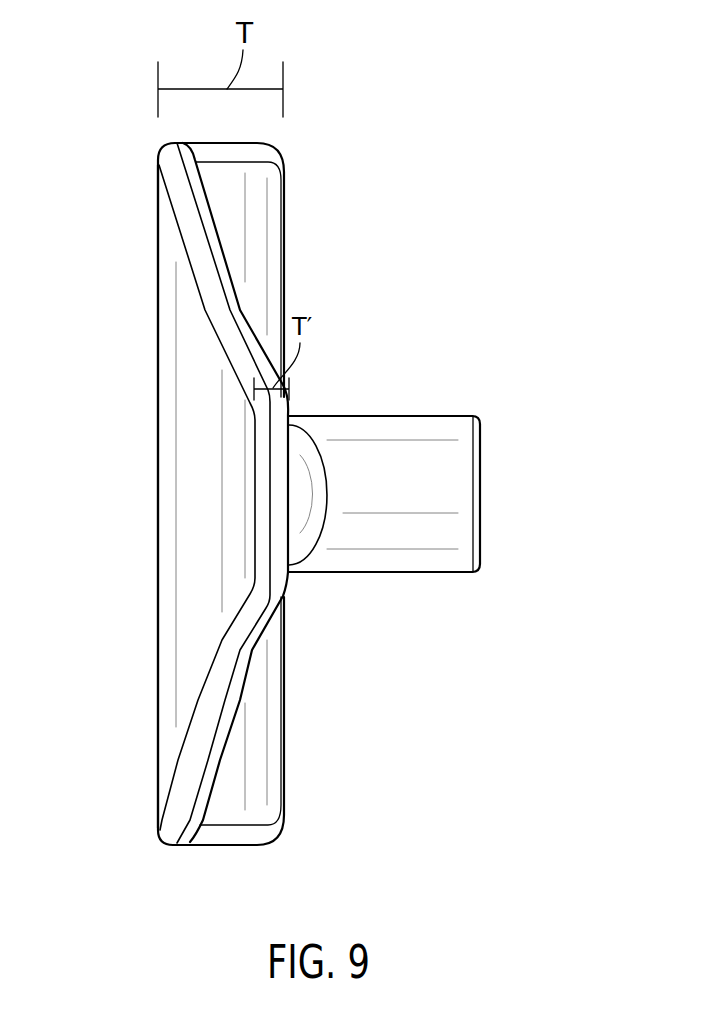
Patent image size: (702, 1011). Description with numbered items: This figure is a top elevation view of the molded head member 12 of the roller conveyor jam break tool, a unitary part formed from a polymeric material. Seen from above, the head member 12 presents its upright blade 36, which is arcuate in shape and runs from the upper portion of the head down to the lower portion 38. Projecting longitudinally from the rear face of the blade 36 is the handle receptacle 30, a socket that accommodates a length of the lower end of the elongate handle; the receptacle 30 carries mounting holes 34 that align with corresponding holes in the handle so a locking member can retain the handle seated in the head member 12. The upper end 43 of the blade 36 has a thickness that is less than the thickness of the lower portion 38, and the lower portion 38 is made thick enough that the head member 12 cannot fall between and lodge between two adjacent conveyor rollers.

The molded head member 12 is at (135, 830).
The handle receptacle 30 is at (478, 416).
The mounting holes 34 is at (385, 416).
The upright blade 36 is at (168, 382).
The lower portion 38 is at (301, 830).
The upper end of the blade 43 is at (262, 522).